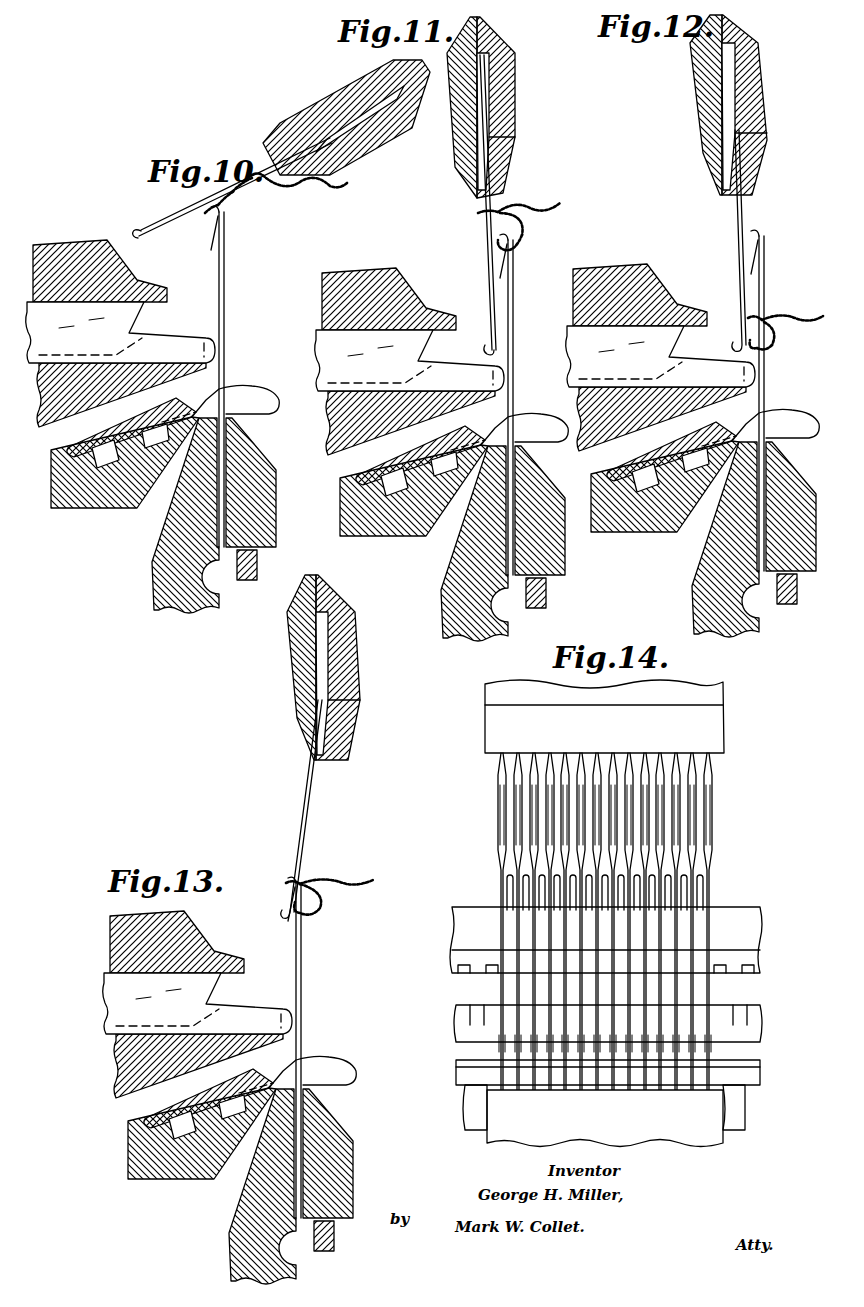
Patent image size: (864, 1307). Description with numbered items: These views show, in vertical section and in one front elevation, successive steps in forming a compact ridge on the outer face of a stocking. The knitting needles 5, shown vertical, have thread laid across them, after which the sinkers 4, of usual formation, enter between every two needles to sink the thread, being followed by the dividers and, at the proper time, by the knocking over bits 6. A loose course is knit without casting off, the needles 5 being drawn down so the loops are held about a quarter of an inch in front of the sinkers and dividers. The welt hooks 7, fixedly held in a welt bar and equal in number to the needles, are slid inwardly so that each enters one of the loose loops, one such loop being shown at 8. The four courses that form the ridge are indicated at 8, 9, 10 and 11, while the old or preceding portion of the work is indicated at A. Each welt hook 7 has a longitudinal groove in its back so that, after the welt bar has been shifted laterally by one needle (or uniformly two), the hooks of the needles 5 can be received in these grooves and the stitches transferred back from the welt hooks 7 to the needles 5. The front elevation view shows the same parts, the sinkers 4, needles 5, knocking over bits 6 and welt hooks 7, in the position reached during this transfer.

In FIG. 10, the sinkers 4 is at (127, 317).
In FIG. 11, the sinkers 4 is at (409, 360).
In FIG. 12, the sinkers 4 is at (660, 356).
In FIG. 13, the sinkers 4 is at (197, 1003).
In FIG. 14, the sinkers 4 is at (500, 987).
In FIG. 10, the needles 5 is at (226, 303).
In FIG. 11, the needles 5 is at (518, 404).
In FIG. 12, the needles 5 is at (770, 400).
In FIG. 13, the needles 5 is at (306, 1047).
In FIG. 14, the needles 5 is at (715, 934).
In FIG. 10, the knocking over bits 6 is at (253, 400).
In FIG. 11, the knocking over bits 6 is at (526, 438).
In FIG. 12, the knocking over bits 6 is at (777, 434).
In FIG. 13, the knocking over bits 6 is at (314, 1081).
In FIG. 14, the knocking over bits 6 is at (769, 1070).
In FIG. 10, the welt hooks 7 is at (203, 207).
In FIG. 11, the welt hooks 7 is at (481, 247).
In FIG. 12, the welt hooks 7 is at (736, 255).
In FIG. 13, the welt hooks 7 is at (300, 800).
In FIG. 14, the welt hooks 7 is at (688, 858).
In FIG. 10, the loop of first course 8 is at (258, 182).
In FIG. 11, the loop of first course 8 is at (480, 214).
In FIG. 12, the loop of first course 8 is at (748, 318).
In FIG. 13, the loop of first course 8 is at (286, 884).
In FIG. 10, the second course 9 is at (247, 197).
In FIG. 11, the second course 9 is at (524, 224).
In FIG. 12, the second course 9 is at (778, 328).
In FIG. 13, the second course 9 is at (326, 896).
In FIG. 10, the third course 10 is at (237, 205).
In FIG. 11, the third course 10 is at (524, 240).
In FIG. 12, the third course 10 is at (778, 346).
In FIG. 13, the third course 10 is at (322, 910).
In FIG. 10, the fourth course 11 is at (225, 213).
In FIG. 11, the fourth course 11 is at (512, 248).
In FIG. 12, the fourth course 11 is at (765, 350).
In FIG. 13, the fourth course 11 is at (305, 916).
In FIG. 10, the old or preceding portion of the work A is at (307, 195).
In FIG. 11, the old or preceding portion of the work A is at (533, 195).
In FIG. 12, the old or preceding portion of the work A is at (806, 316).
In FIG. 13, the old or preceding portion of the work A is at (358, 878).